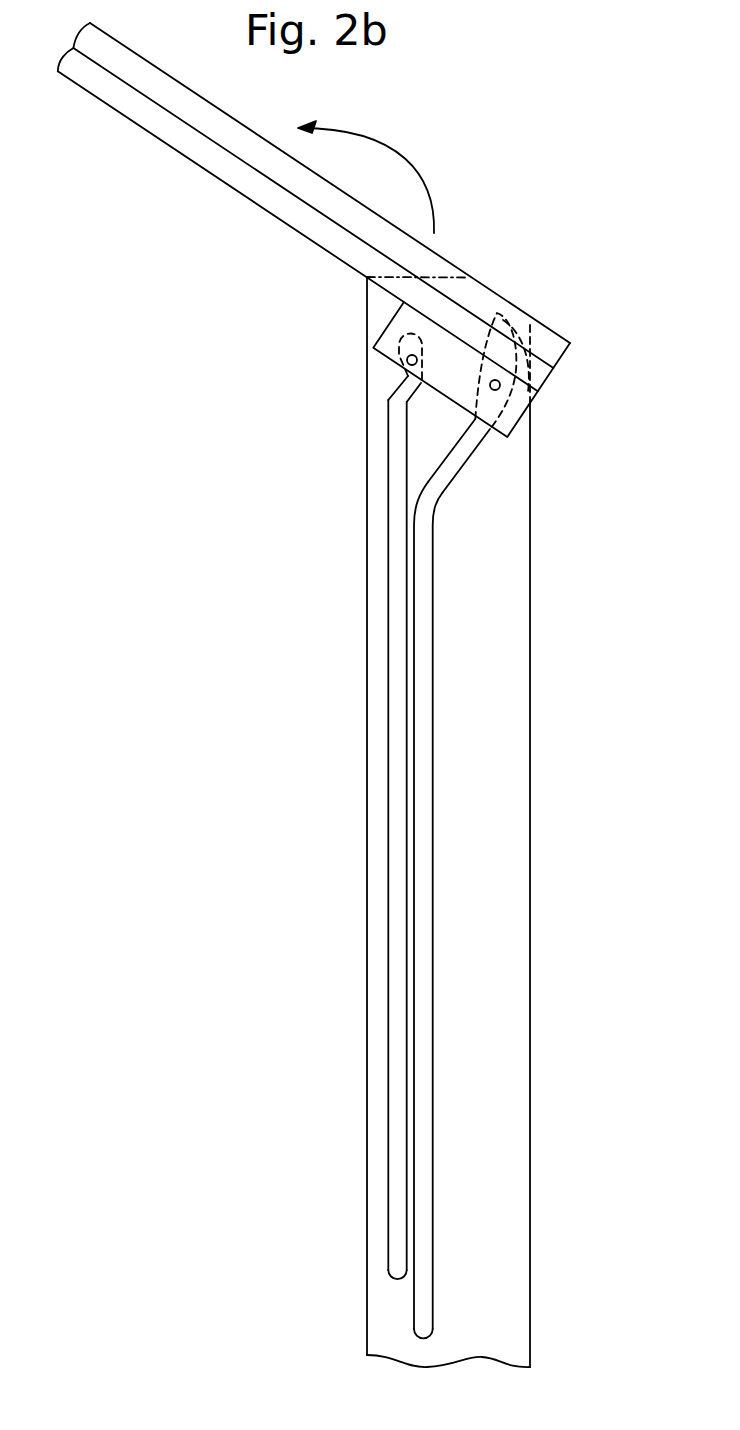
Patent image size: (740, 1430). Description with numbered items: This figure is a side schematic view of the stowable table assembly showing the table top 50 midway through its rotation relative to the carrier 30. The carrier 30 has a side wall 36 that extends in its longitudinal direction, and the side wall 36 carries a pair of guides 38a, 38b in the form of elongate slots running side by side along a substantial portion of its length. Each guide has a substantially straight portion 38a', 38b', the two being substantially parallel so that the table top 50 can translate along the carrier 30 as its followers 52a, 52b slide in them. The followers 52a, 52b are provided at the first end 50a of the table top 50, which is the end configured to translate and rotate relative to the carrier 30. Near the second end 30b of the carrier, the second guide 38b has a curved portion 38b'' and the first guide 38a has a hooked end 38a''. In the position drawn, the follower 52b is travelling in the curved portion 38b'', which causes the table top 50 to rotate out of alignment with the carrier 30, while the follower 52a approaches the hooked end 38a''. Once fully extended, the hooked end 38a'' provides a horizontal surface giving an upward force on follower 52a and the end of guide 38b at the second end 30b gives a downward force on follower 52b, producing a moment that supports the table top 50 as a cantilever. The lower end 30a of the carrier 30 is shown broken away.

The carrier 30 is at (495, 998).
The lower end of body 30a is at (497, 1348).
The second end of the carrier 30b is at (480, 290).
The side wall 36 is at (518, 769).
The first guide 38a is at (343, 835).
The straight portion of the first guide 38a' is at (343, 1236).
The hooked end of the first guide 38a'' is at (351, 368).
The second guide 38b is at (516, 905).
The straight portion of the second guide 38b' is at (518, 1278).
The curved portion of the second guide 38b'' is at (535, 393).
The table top 50 is at (153, 117).
The first end of the table top 50a is at (513, 432).
The first follower 52a is at (407, 354).
The second follower 52b is at (501, 389).